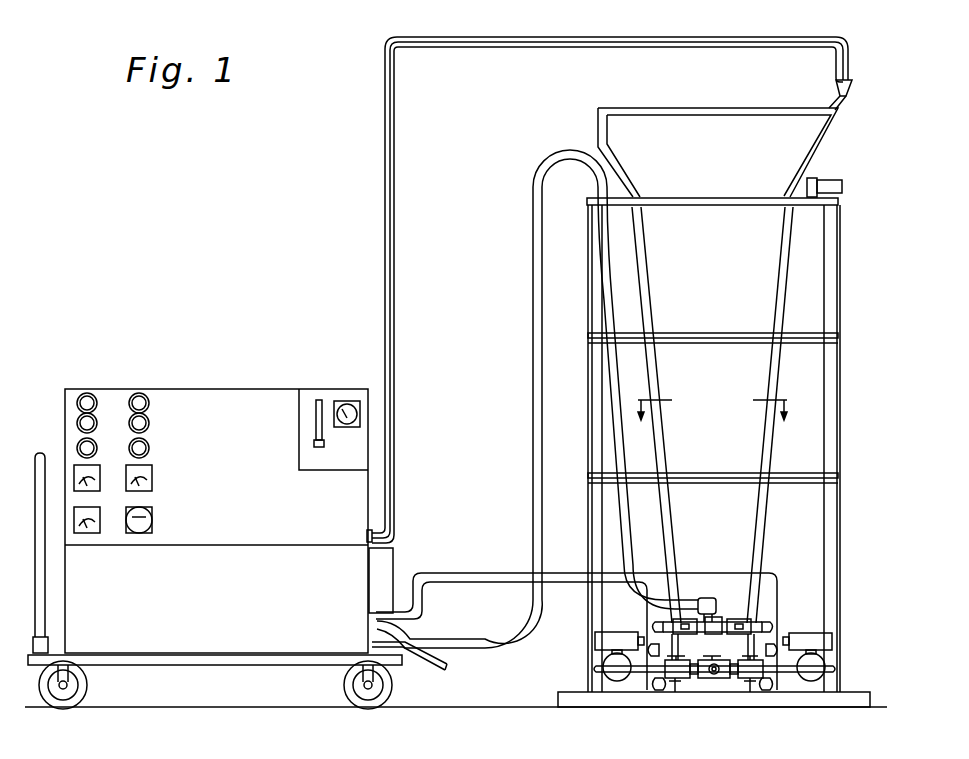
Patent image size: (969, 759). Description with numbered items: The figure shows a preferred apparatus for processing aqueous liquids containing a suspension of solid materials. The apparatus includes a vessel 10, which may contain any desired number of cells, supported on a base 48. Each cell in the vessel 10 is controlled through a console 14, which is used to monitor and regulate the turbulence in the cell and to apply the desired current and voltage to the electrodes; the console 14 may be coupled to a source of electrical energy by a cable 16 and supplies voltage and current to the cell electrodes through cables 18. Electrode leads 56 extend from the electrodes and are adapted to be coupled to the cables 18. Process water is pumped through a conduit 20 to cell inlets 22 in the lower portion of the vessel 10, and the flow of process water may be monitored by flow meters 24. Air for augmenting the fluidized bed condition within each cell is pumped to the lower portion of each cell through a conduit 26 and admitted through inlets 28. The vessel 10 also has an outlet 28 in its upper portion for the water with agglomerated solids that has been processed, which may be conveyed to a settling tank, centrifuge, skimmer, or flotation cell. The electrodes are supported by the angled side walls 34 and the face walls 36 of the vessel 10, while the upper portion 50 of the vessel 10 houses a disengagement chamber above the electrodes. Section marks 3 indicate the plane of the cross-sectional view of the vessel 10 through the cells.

The section line 3- 3 is at (713, 412).
The vessel 10 is at (810, 316).
The console 14 is at (195, 381).
The cable 16 is at (438, 664).
The cables 18 is at (394, 418).
The conduit 20 is at (719, 680).
The cell inlets 22 is at (658, 690).
The flow meters 24 is at (613, 640).
The conduit 26 is at (518, 633).
The outlet 28 is at (830, 178).
The side walls 34 is at (649, 366).
The face walls 36 is at (714, 456).
The base 48 is at (560, 701).
The upper portion 50 is at (818, 158).
The electrode leads 56 is at (846, 92).